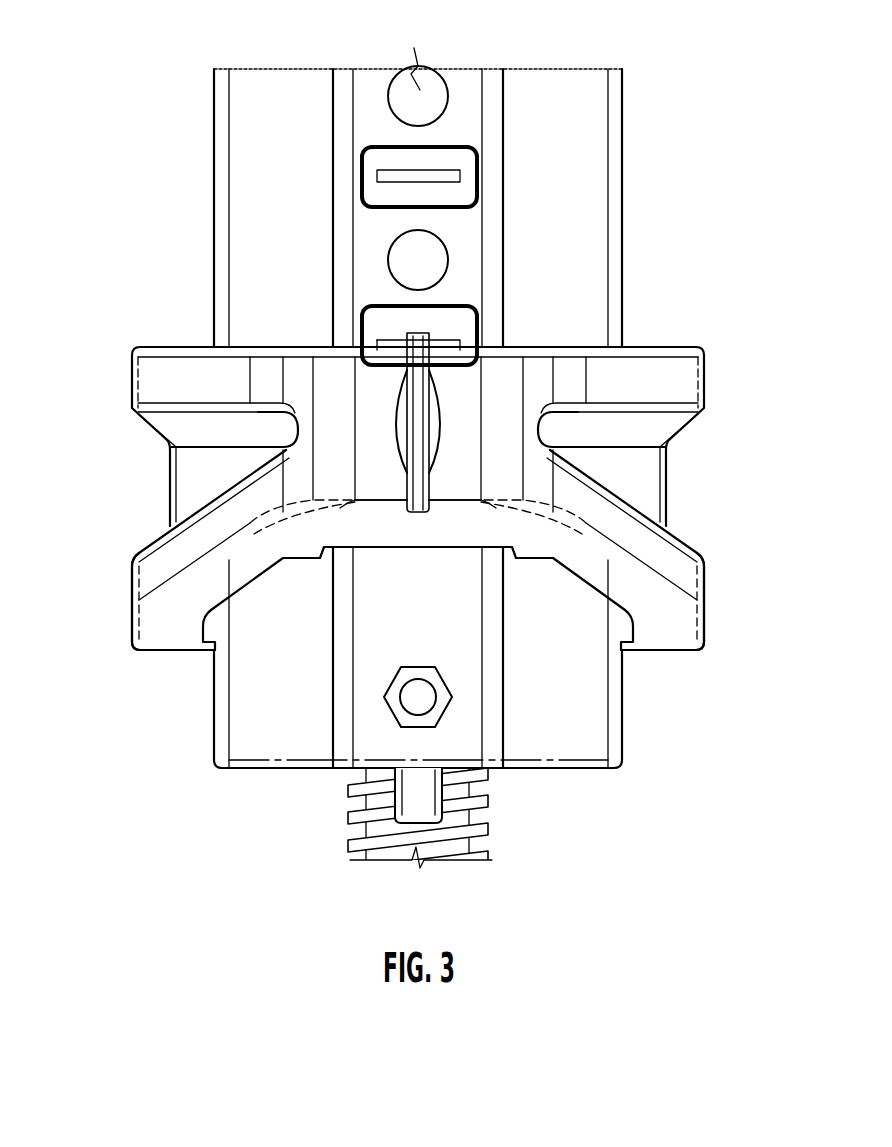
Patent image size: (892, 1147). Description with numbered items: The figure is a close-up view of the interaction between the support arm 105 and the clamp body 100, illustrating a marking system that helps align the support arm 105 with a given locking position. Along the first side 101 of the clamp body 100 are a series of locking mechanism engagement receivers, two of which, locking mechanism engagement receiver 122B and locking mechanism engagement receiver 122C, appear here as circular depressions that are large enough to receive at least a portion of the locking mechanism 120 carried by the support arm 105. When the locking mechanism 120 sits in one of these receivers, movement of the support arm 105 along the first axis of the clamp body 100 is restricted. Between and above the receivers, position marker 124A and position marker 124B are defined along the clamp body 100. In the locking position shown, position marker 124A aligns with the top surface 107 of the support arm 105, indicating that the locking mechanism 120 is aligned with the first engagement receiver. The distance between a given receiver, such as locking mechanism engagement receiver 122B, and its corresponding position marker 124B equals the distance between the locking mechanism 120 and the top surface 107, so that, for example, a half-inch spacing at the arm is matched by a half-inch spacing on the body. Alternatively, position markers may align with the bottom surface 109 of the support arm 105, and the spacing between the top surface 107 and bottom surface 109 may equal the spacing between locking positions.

The clamp body 100 is at (189, 779).
The first side 101 is at (272, 300).
The support arm 105 is at (127, 665).
The top surface 107 is at (545, 337).
The bottom surface 109 is at (422, 533).
The locking mechanism 120 is at (415, 423).
The locking mechanism engagement receiver 122B is at (413, 270).
The locking mechanism engagement receiver 122C is at (412, 95).
The position marker 124A is at (465, 303).
The position marker 124B is at (465, 145).